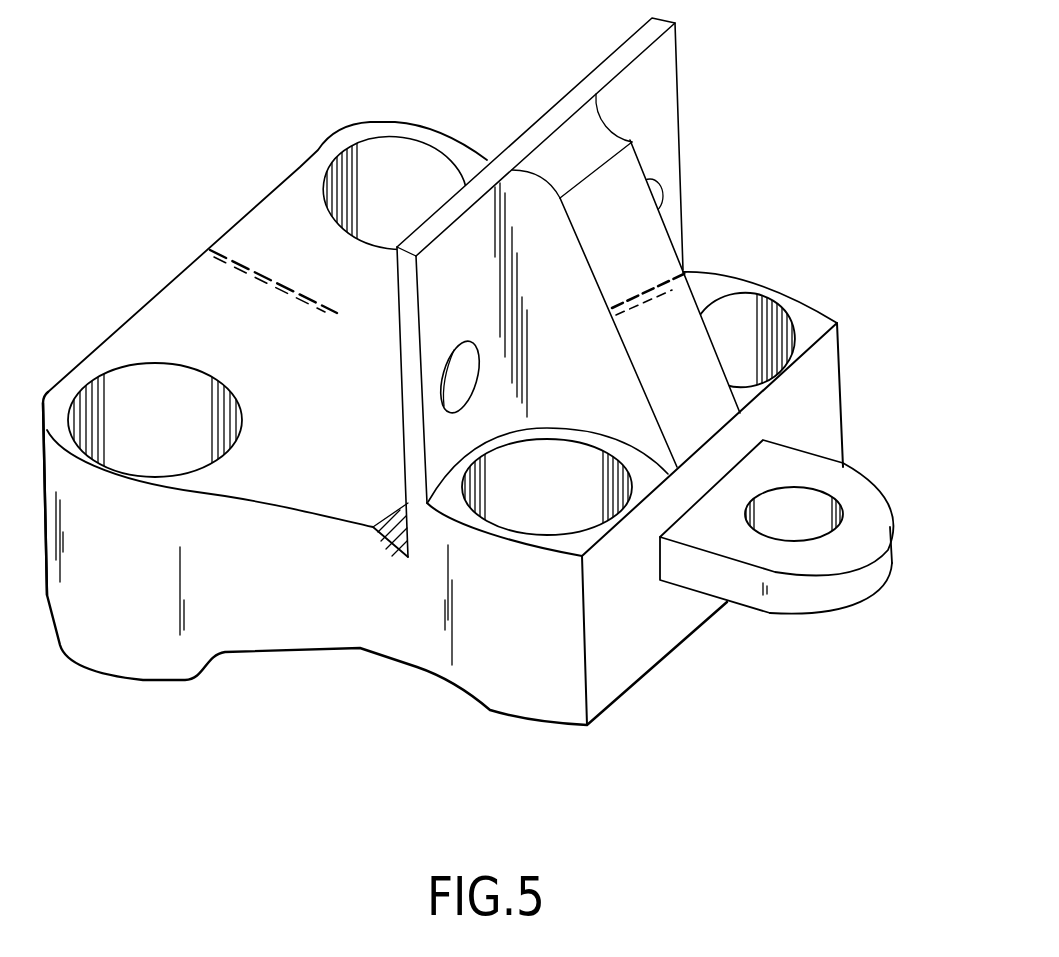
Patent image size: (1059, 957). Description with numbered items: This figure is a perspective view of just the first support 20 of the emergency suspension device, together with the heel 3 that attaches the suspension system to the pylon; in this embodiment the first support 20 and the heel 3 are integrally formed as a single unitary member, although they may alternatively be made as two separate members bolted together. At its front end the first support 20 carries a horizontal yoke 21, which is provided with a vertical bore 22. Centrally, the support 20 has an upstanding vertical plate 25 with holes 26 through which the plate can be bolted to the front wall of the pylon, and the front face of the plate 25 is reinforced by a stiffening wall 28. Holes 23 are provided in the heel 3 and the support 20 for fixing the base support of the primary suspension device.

The heel 3 is at (123, 658).
The first support 20 is at (475, 106).
The horizontal yoke 21 is at (863, 497).
The vertical bore 22 is at (803, 510).
The holes 23 is at (140, 402).
The vertical plate 25 is at (657, 98).
The holes 26 is at (460, 398).
The stiffening wall 28 is at (643, 252).